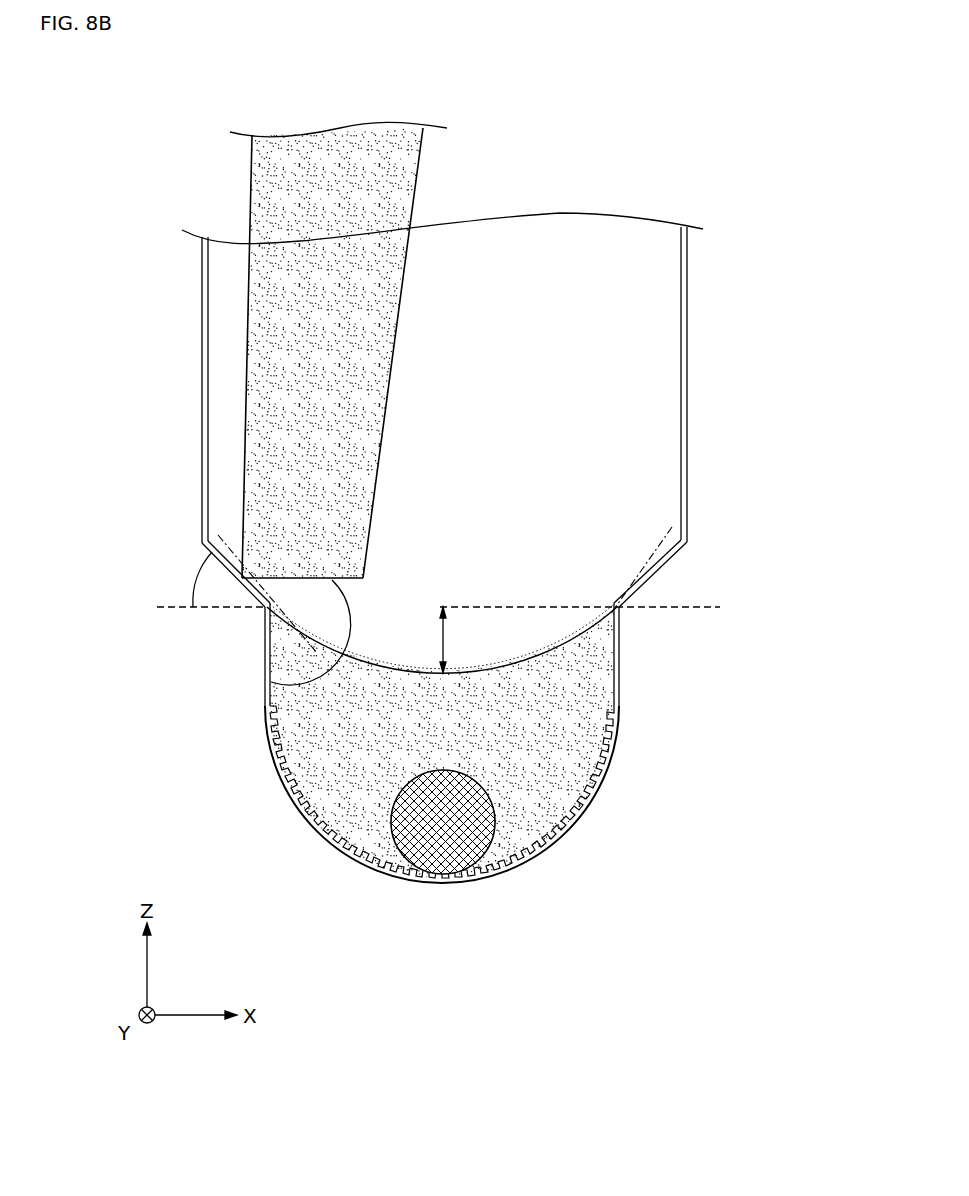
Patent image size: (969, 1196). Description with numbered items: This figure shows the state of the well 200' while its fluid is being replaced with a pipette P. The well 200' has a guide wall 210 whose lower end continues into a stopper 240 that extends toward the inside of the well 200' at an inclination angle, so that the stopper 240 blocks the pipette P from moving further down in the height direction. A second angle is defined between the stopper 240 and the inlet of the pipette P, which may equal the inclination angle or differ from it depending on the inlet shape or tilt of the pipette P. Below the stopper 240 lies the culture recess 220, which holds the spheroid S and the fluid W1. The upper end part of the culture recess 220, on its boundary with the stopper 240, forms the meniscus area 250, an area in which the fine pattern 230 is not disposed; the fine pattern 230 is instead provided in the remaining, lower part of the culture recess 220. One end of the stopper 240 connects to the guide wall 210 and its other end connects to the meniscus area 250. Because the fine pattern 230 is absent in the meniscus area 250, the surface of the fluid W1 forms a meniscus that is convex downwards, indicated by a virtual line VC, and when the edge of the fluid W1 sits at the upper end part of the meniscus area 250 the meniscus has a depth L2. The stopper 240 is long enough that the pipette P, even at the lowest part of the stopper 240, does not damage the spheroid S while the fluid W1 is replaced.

The well 200' is at (744, 97).
The pipette P is at (267, 185).
The guide wall 210 is at (687, 288).
The stopper 240 is at (658, 575).
The virtual line VC is at (652, 563).
The meniscus area 250 is at (620, 690).
The fine pattern 230 is at (618, 740).
The culture recess 220 is at (606, 786).
The spheroid S is at (441, 860).
The fluid W1 is at (303, 727).
The depth of the meniscus L2 is at (427, 640).